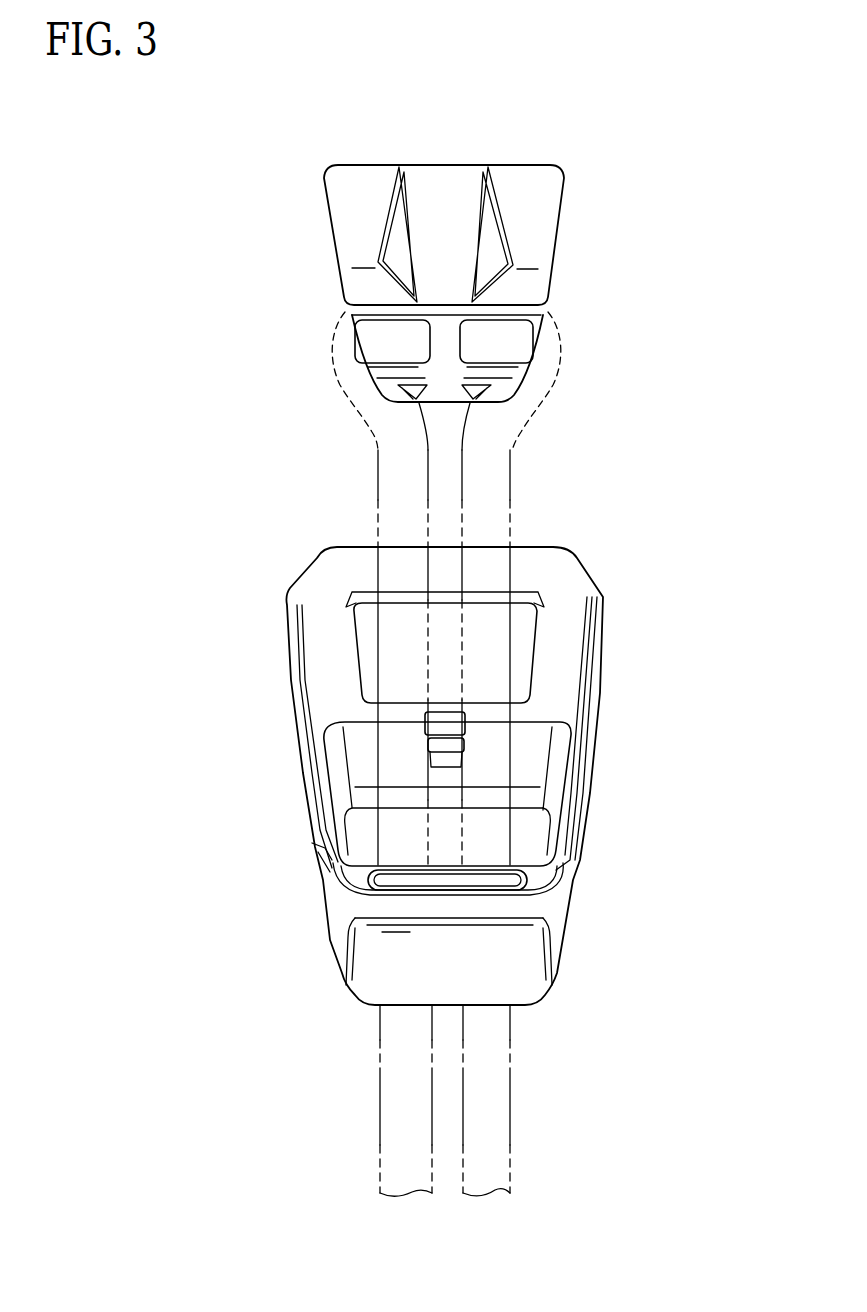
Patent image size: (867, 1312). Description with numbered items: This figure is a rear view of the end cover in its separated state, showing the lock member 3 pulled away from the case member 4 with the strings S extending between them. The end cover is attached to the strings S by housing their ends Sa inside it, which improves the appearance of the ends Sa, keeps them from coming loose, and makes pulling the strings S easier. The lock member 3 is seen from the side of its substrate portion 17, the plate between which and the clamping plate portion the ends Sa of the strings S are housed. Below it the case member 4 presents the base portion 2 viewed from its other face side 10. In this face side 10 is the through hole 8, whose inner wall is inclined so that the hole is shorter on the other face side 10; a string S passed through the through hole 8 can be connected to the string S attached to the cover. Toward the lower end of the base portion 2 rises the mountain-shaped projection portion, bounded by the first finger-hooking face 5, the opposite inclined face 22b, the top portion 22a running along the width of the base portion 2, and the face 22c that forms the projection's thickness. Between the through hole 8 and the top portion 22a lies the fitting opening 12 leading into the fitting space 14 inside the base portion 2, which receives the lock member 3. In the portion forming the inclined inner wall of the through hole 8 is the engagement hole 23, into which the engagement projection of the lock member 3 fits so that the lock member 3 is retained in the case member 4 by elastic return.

The lock member 3 is at (523, 165).
The substrate portion 17 is at (530, 243).
The ends of the strings Sa is at (335, 375).
The string S is at (395, 1143).
The base portion 2 is at (592, 763).
The case member 4 is at (299, 680).
The other face side 10 is at (560, 698).
The through hole 8 is at (520, 642).
The engagement hole 23 is at (427, 747).
The fitting opening 12 is at (552, 777).
The fitting space 14 is at (533, 848).
The face 22b is at (316, 847).
The top portion 22a is at (445, 910).
The first finger-hooking face 5 is at (515, 965).
The face 22c is at (339, 941).